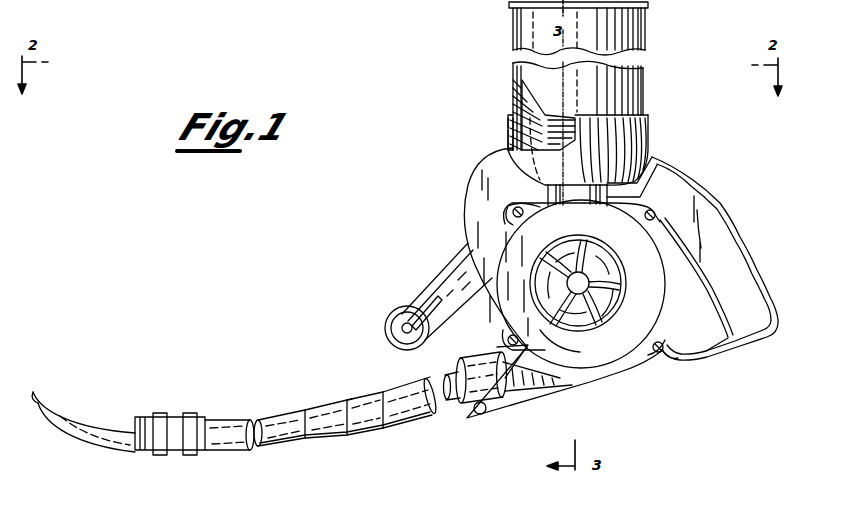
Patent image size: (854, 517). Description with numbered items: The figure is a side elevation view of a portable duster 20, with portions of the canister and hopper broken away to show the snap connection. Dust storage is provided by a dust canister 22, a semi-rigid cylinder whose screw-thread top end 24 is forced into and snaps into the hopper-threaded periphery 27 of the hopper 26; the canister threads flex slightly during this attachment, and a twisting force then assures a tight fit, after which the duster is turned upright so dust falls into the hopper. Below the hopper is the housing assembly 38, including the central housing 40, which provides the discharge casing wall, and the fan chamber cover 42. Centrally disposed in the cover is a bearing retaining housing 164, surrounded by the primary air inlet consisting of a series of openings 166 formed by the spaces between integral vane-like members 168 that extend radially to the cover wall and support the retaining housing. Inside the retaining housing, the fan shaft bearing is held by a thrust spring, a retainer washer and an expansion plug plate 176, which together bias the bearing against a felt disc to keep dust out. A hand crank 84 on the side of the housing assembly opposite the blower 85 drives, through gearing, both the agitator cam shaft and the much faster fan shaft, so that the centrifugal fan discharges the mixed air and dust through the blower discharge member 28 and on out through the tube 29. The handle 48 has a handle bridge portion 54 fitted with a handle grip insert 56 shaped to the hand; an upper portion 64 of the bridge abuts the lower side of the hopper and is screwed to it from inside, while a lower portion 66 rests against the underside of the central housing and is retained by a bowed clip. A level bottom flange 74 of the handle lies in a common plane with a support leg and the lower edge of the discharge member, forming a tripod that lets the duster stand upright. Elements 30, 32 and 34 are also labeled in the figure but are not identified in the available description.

The duster 20 is at (455, 165).
The dust canister 22 is at (512, 16).
The screw-thread top end 24 is at (516, 106).
The hopper 26 is at (510, 122).
The hopper-threaded periphery 27 is at (508, 134).
The blower discharge member 28 is at (476, 408).
The tube 29 is at (342, 394).
The hose section 30 is at (412, 420).
The hose section 32 is at (310, 440).
The nozzle 34 is at (80, 432).
The housing assembly 38 is at (455, 240).
The central housing 40 is at (548, 196).
The fan chamber cover 42 is at (612, 376).
The handle 48 is at (712, 194).
The handle bridge portion 54 is at (744, 234).
The handle grip insert 56 is at (742, 268).
The upper portion of handle bridge 64 is at (655, 168).
The lower portion of handle bridge 66 is at (664, 356).
The level bottom flange 74 is at (717, 344).
The hand crank 84 is at (446, 283).
The blower 85 is at (578, 326).
The bearing retaining housing 164 is at (582, 258).
The openings 166 is at (618, 286).
The vane-like members 168 is at (600, 316).
The expansion plug plate 176 is at (598, 278).